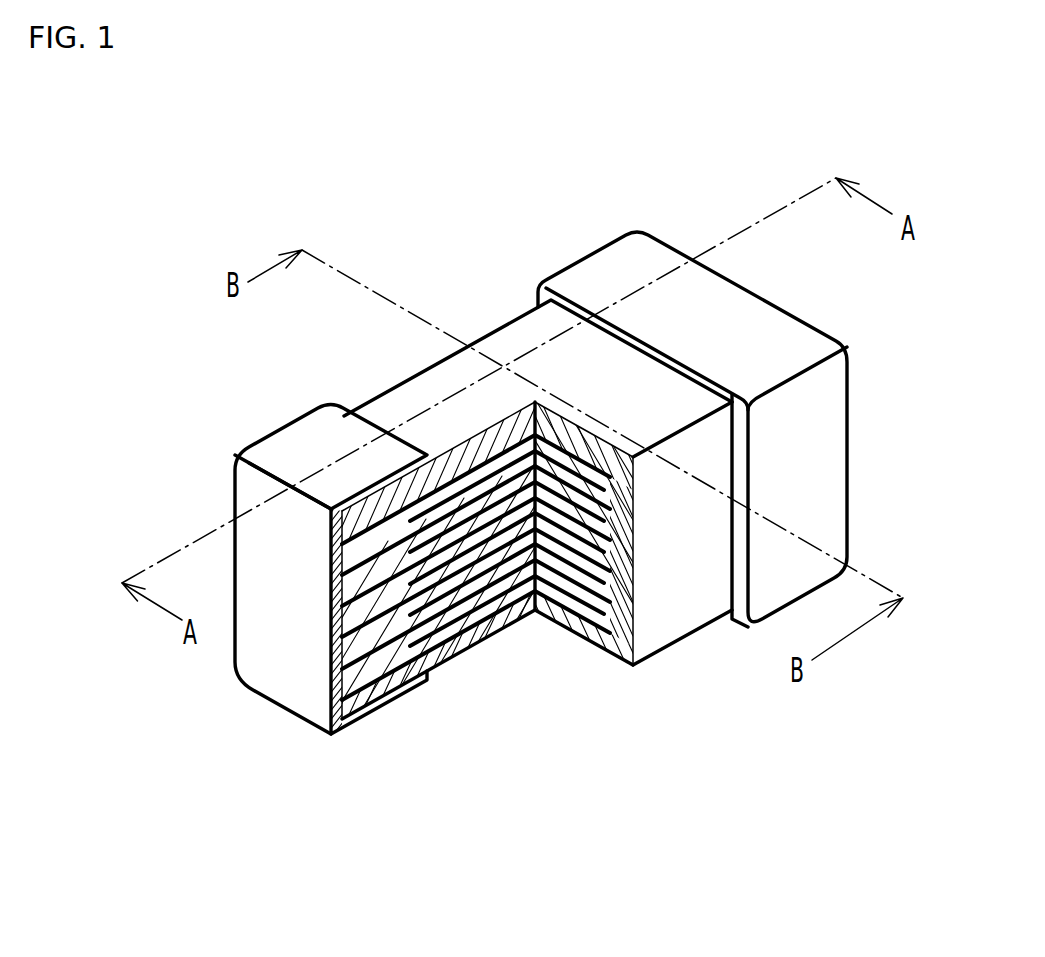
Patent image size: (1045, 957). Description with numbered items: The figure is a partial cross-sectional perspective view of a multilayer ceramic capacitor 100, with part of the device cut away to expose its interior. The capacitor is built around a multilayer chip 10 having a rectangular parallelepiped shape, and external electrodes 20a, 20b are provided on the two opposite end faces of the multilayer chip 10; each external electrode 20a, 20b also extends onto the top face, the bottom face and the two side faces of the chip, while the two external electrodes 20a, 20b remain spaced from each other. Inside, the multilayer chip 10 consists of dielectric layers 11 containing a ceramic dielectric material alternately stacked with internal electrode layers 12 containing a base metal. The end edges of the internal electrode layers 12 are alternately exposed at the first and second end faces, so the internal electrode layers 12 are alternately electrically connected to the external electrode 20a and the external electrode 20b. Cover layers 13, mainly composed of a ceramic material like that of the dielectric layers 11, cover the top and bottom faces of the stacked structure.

The multilayer ceramic capacitor 100 is at (945, 161).
The multilayer chip 10 is at (373, 400).
The dielectric layer 11 is at (498, 572).
The internal electrode layer 12 is at (522, 612).
The cover layer 13 is at (503, 340).
The external electrode 20a is at (258, 440).
The external electrode 20b is at (597, 268).